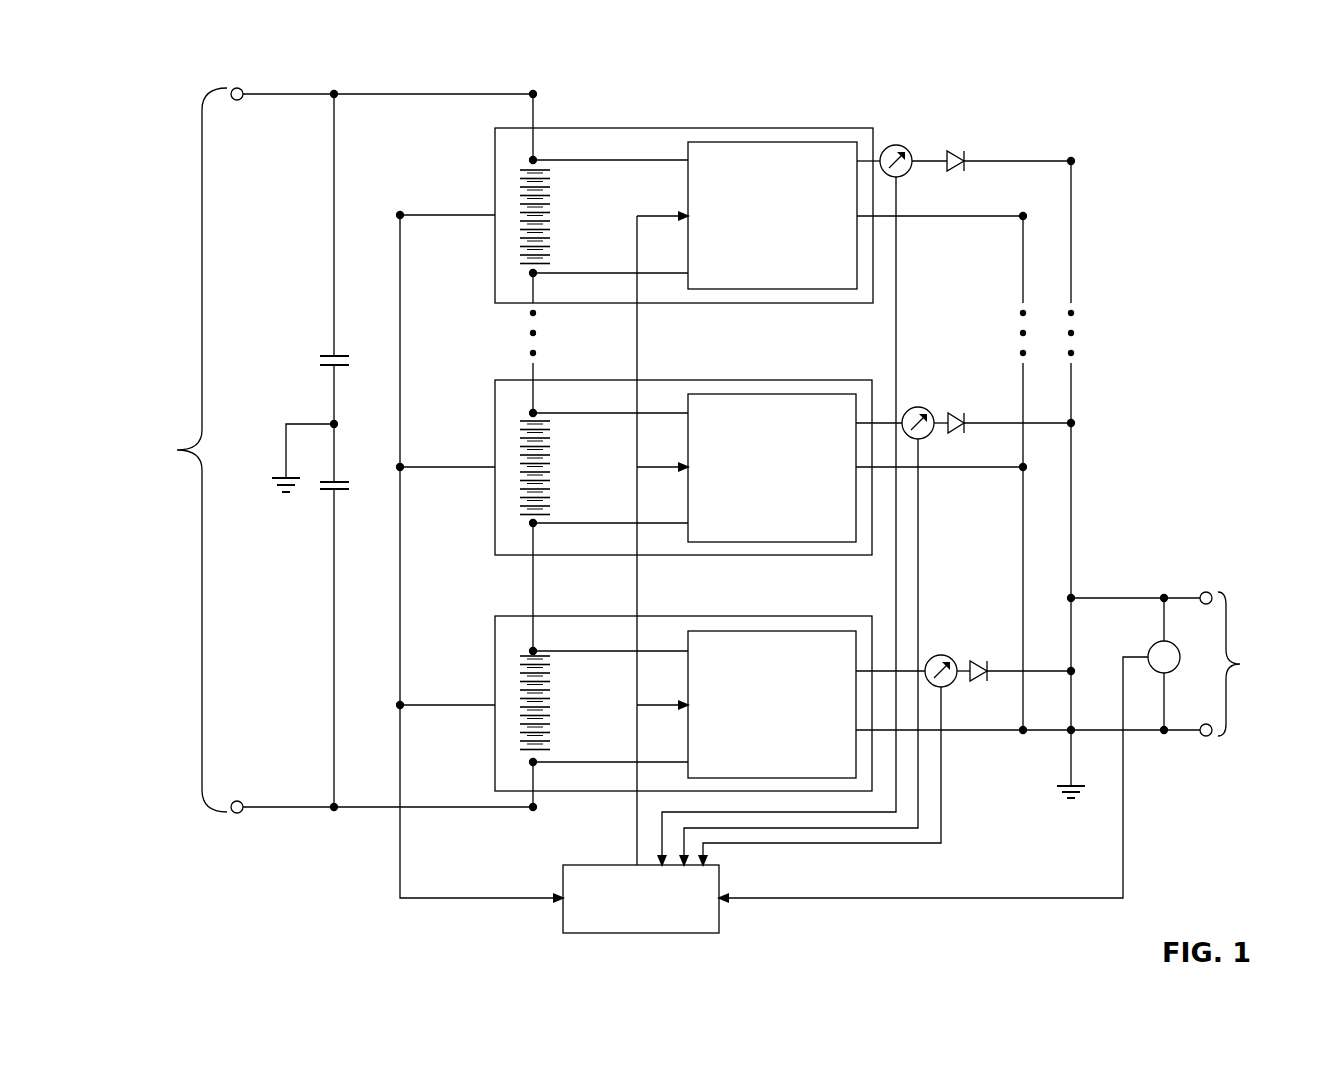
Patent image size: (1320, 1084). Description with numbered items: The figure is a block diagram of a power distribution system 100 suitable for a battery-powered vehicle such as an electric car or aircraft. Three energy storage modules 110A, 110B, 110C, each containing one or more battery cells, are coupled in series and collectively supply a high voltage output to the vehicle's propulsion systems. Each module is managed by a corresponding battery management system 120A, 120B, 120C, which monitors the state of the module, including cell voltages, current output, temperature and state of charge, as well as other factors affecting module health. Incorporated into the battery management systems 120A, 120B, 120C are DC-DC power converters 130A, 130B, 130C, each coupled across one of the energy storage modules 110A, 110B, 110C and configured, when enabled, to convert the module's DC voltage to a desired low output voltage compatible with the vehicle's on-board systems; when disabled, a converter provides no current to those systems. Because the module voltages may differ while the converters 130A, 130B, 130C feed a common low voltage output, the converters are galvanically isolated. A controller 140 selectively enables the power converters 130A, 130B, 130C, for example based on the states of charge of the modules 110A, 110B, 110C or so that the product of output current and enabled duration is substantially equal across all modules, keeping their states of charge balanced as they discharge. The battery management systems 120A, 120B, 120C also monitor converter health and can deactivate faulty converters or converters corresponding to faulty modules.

The power distribution system 100 is at (178, 74).
The energy storage module 110A is at (518, 222).
The energy storage module 110B is at (518, 472).
The energy storage module 110C is at (518, 712).
The battery management system 120A is at (782, 128).
The battery management system 120B is at (783, 380).
The battery management system 120C is at (783, 616).
The power converter 130A is at (805, 261).
The power converter 130B is at (805, 513).
The power converter 130C is at (805, 750).
The controller 140 is at (619, 926).